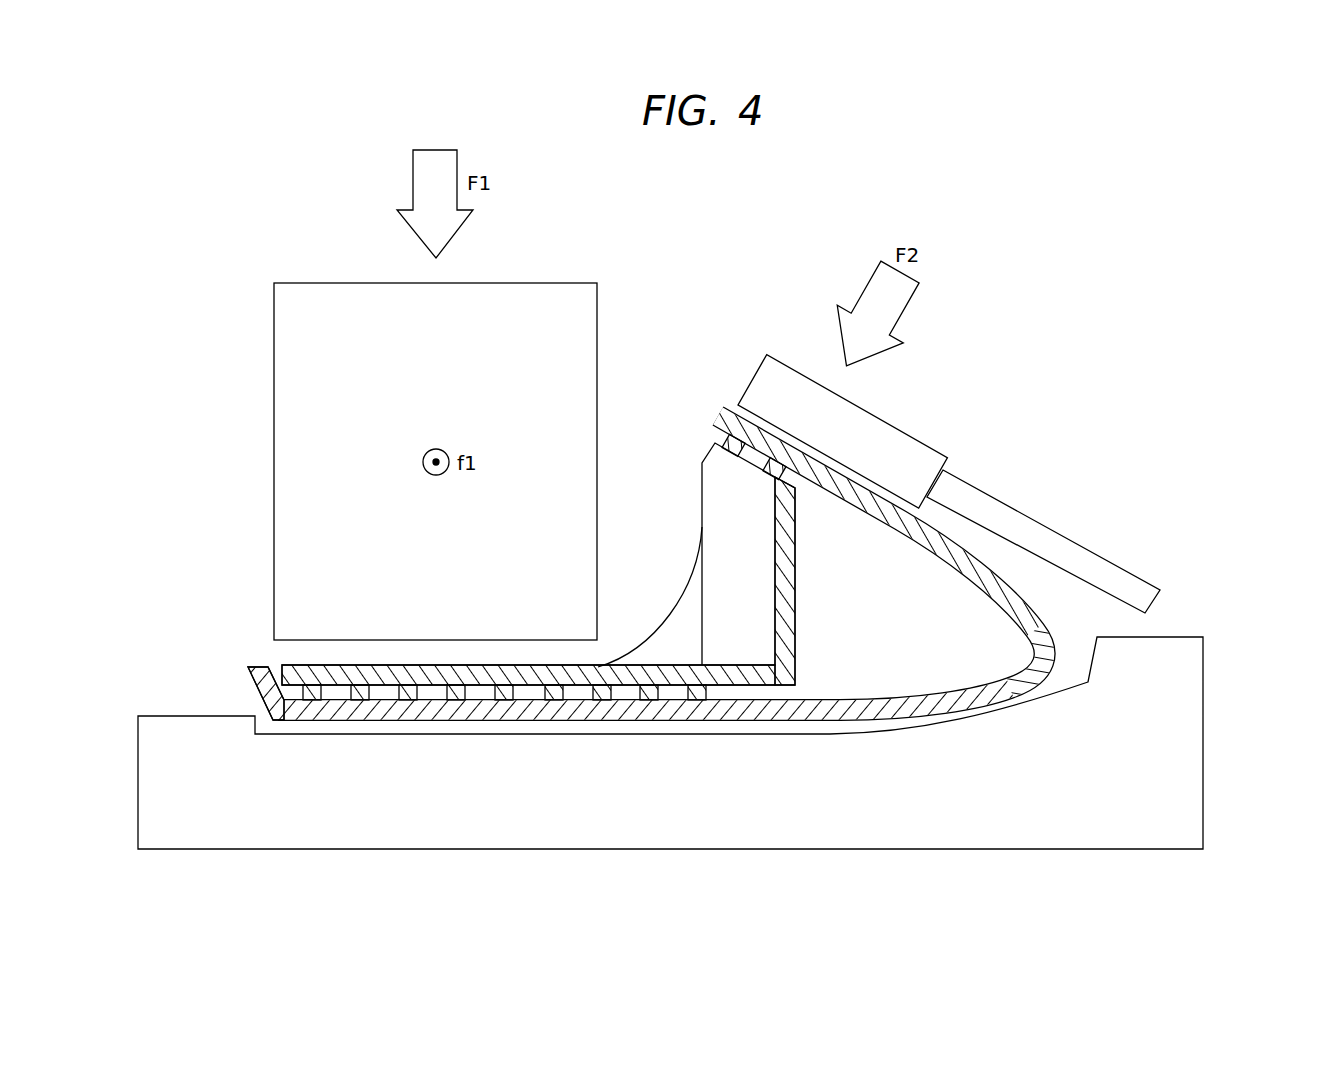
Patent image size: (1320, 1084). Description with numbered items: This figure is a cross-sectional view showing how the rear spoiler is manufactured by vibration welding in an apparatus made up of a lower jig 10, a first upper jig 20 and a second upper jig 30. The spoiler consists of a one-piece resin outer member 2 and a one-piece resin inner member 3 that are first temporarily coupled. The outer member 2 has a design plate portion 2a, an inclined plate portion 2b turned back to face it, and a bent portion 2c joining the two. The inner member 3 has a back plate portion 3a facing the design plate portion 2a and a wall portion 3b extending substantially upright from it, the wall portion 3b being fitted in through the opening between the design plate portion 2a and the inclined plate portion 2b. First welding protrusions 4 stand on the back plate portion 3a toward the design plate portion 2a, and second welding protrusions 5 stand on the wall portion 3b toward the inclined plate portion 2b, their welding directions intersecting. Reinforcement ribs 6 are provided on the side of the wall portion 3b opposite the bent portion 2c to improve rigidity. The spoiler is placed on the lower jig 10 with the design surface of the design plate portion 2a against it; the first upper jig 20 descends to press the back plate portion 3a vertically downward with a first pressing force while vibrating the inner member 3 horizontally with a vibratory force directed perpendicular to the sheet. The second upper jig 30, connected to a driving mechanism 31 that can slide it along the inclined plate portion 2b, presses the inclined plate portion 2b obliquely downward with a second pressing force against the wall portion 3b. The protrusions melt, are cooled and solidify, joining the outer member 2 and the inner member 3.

The outer member 2 is at (741, 659).
The design plate portion 2a is at (403, 713).
The inclined plate portion 2b is at (920, 530).
The bent portion 2c is at (1040, 657).
The inner member 3 is at (535, 547).
The back plate portion 3a is at (357, 668).
The wall portion 3b is at (797, 603).
The first welding protrusions 4 is at (510, 713).
The second welding protrusions 5 is at (724, 441).
The reinforcement ribs 6 is at (688, 608).
The lower jig 10 is at (1185, 750).
The first upper jig 20 is at (288, 347).
The second upper jig 30 is at (930, 444).
The driving mechanism 31 is at (1098, 556).